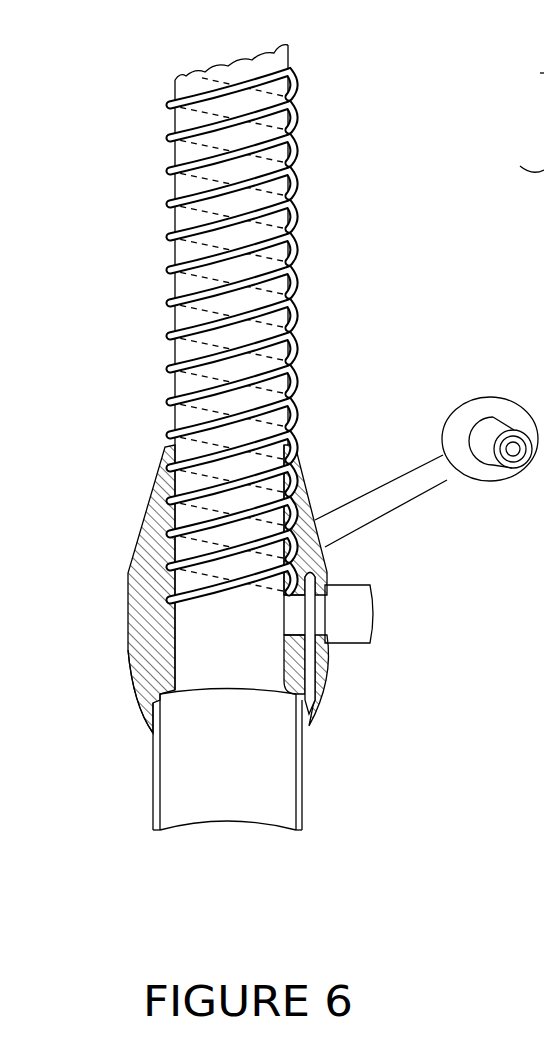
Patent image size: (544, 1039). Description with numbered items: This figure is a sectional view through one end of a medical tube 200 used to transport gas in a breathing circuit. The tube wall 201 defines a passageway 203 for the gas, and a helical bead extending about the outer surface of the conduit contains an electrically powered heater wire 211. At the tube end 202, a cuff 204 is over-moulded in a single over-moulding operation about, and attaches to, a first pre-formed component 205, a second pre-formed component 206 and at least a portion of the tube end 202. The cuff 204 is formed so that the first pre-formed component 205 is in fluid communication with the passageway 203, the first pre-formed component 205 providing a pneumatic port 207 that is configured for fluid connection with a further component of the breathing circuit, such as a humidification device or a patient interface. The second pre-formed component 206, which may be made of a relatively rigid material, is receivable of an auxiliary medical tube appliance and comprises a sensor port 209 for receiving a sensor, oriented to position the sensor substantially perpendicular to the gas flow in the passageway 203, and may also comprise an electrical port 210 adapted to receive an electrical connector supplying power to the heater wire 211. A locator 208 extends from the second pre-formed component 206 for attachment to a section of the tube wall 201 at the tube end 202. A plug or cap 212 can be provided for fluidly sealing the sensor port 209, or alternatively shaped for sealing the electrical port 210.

The medical tube 200 is at (114, 246).
The tube wall 201 is at (166, 420).
The tube end 202 is at (150, 607).
The passageway 203 is at (208, 66).
The cuff 204 is at (148, 675).
The first pre-formed component 205 is at (302, 785).
The second pre-formed component 206 is at (328, 634).
The pneumatic port 207 is at (237, 839).
The locator 208 is at (522, 437).
The sensor port 209 is at (380, 617).
The electrical port 210 is at (512, 166).
The heater wire 211 is at (300, 412).
The plug or cap 212 is at (484, 406).